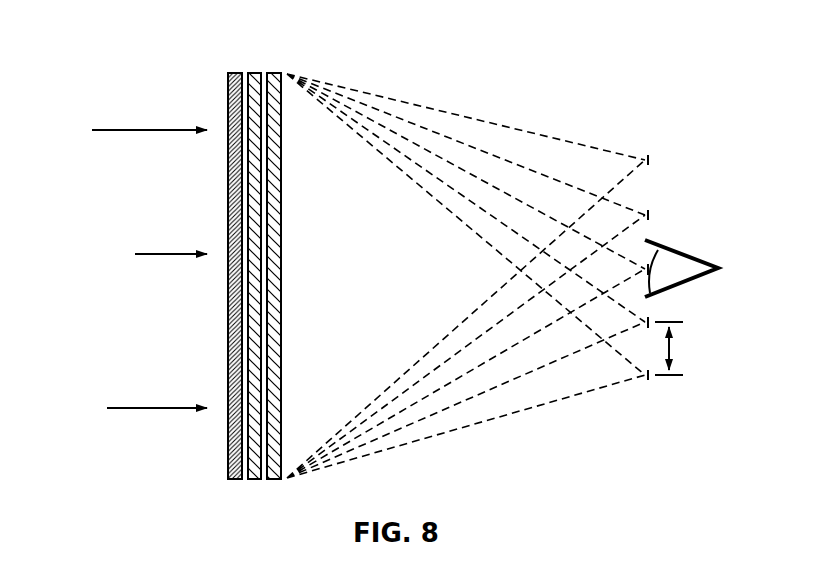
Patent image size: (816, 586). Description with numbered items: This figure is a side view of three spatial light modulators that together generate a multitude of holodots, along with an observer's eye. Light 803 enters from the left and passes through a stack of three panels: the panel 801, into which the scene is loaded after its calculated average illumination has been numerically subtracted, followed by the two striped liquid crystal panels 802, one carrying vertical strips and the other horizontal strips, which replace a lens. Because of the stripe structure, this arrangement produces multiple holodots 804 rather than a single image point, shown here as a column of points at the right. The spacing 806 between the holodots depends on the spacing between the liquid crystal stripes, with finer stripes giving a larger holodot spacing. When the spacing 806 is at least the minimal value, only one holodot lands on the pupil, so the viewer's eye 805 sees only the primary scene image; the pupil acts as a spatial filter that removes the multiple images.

The panel 801 is at (237, 73).
The striped liquid crystal panels 802 is at (275, 73).
The incident light 803 is at (147, 408).
The holodots 804 is at (651, 160).
The viewer's eye 805 is at (680, 250).
The spacing 806 is at (670, 348).